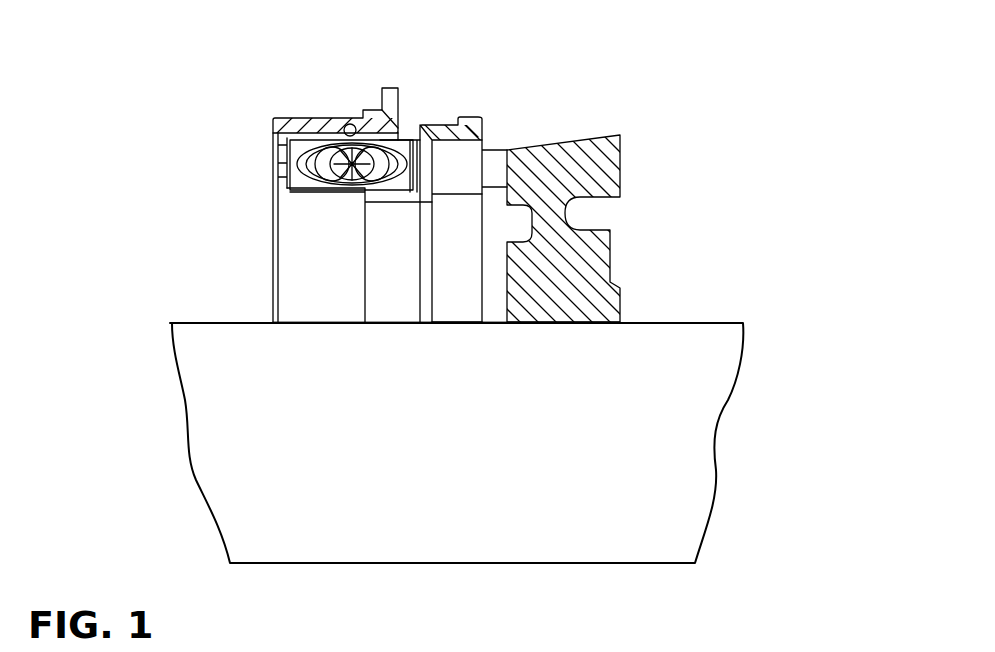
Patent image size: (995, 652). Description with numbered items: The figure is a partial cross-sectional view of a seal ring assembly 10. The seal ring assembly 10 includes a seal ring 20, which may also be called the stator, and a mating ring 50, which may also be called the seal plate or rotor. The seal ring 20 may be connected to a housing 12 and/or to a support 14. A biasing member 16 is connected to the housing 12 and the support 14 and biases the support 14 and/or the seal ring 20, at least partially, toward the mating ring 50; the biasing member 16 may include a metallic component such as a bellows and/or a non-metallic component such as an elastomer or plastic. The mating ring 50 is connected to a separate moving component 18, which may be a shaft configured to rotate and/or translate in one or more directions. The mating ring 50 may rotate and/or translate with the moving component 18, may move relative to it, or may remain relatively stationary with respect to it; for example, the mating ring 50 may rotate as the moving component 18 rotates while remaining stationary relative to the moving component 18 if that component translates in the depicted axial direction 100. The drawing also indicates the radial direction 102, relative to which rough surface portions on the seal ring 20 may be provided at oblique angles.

The seal ring assembly 10 is at (232, 104).
The housing 12 is at (312, 118).
The support 14 is at (474, 107).
The biasing member 16 is at (337, 186).
The moving component 18 is at (590, 568).
The seal ring 20 is at (453, 197).
The mating ring 50 is at (628, 127).
The axial direction 100 is at (806, 437).
The radial direction 102 is at (92, 372).